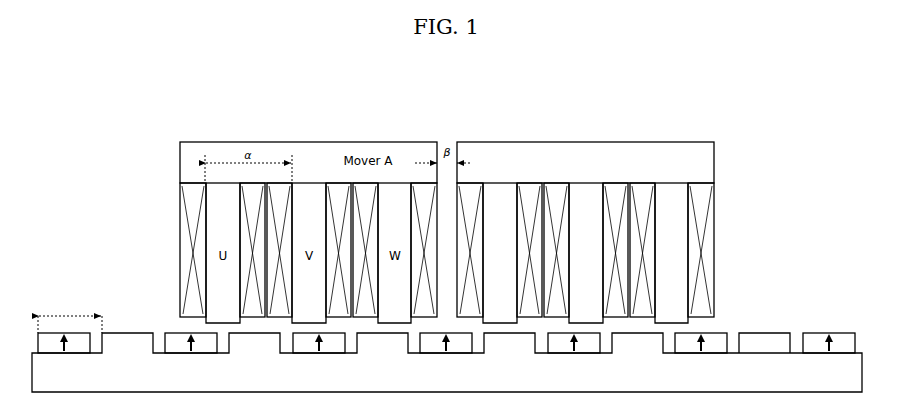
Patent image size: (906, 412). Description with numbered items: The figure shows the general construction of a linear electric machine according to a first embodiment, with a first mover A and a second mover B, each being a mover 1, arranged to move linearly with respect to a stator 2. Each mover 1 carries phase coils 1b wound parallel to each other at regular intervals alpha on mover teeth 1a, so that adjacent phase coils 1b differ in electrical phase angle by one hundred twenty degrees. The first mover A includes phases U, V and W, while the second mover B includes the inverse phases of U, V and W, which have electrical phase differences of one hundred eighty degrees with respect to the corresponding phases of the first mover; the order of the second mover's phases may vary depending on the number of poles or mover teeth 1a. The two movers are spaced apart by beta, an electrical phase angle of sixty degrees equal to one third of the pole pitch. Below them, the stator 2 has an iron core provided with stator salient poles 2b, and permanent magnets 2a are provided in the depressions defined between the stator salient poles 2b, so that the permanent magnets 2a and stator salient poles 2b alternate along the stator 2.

The mover 1 is at (698, 170).
The mover teeth 1a is at (680, 252).
The phase coils 1b is at (703, 255).
The stator 2 is at (122, 373).
The permanent magnets 2a is at (712, 345).
The stator salient poles 2b is at (777, 343).